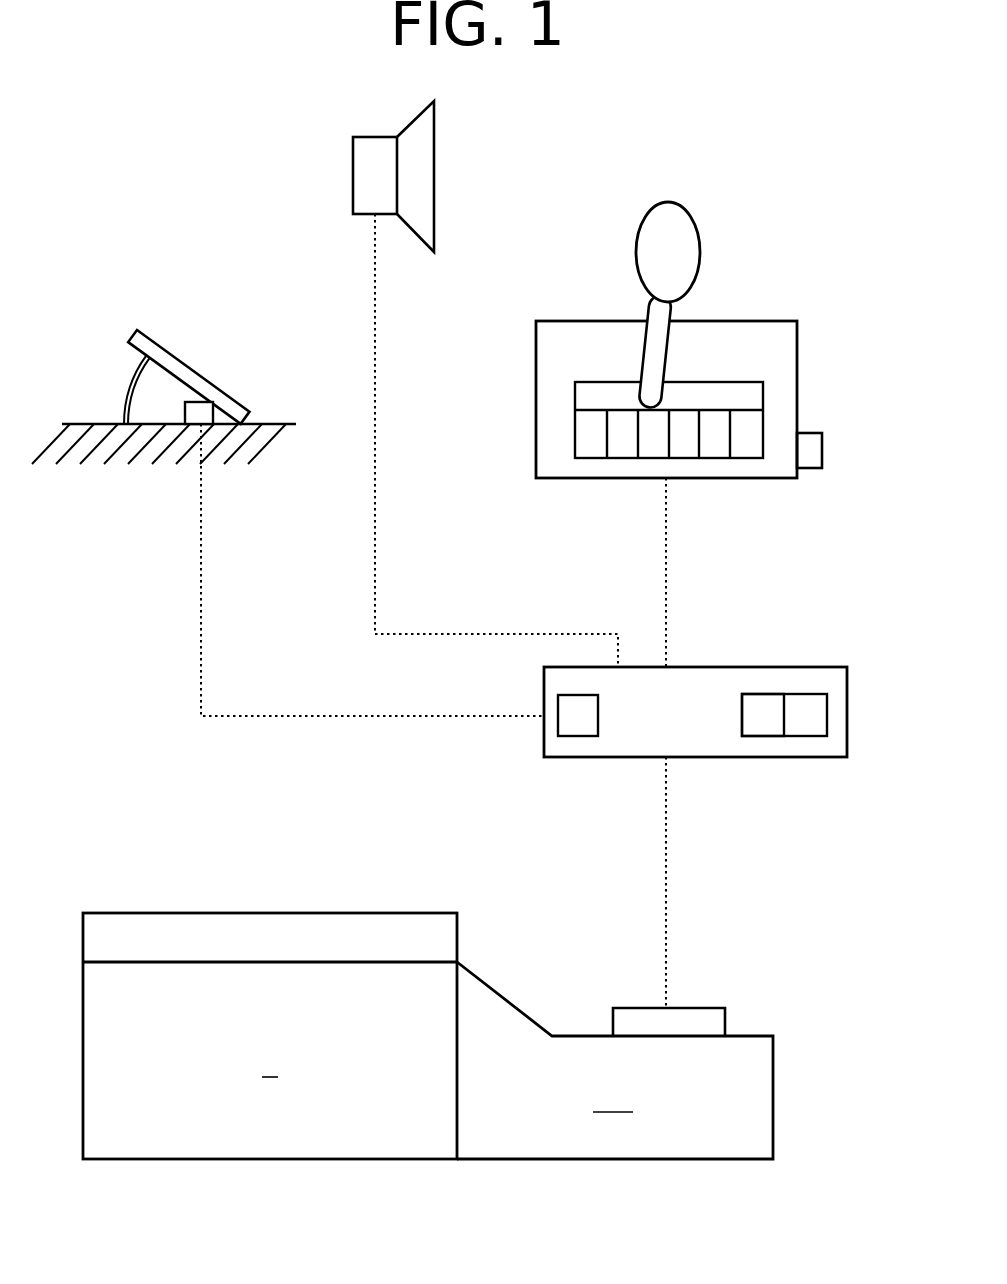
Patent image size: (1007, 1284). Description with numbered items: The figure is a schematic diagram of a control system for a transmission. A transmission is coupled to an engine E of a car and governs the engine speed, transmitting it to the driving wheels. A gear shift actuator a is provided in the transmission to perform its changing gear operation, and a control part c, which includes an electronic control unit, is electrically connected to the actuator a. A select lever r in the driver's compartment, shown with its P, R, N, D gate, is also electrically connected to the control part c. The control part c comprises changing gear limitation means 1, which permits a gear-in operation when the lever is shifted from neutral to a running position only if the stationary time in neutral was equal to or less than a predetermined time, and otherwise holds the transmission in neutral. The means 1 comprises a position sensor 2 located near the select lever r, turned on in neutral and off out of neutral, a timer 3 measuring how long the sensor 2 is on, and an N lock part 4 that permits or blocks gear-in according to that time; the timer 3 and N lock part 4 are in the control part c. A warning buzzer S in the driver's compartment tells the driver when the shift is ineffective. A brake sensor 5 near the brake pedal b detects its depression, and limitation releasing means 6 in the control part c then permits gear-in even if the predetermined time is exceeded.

The warning buzzer S is at (434, 183).
The select lever r is at (702, 232).
The position sensor 2 is at (822, 448).
The changing gear limitation means 1 is at (830, 580).
The brake pedal b is at (163, 346).
The brake sensor 5 is at (197, 415).
The control part c is at (707, 757).
The limitation releasing means 6 is at (573, 737).
The timer 3 is at (827, 714).
The N lock part 4 is at (767, 695).
The gear shift actuator a is at (693, 1008).
The engine E is at (270, 1036).